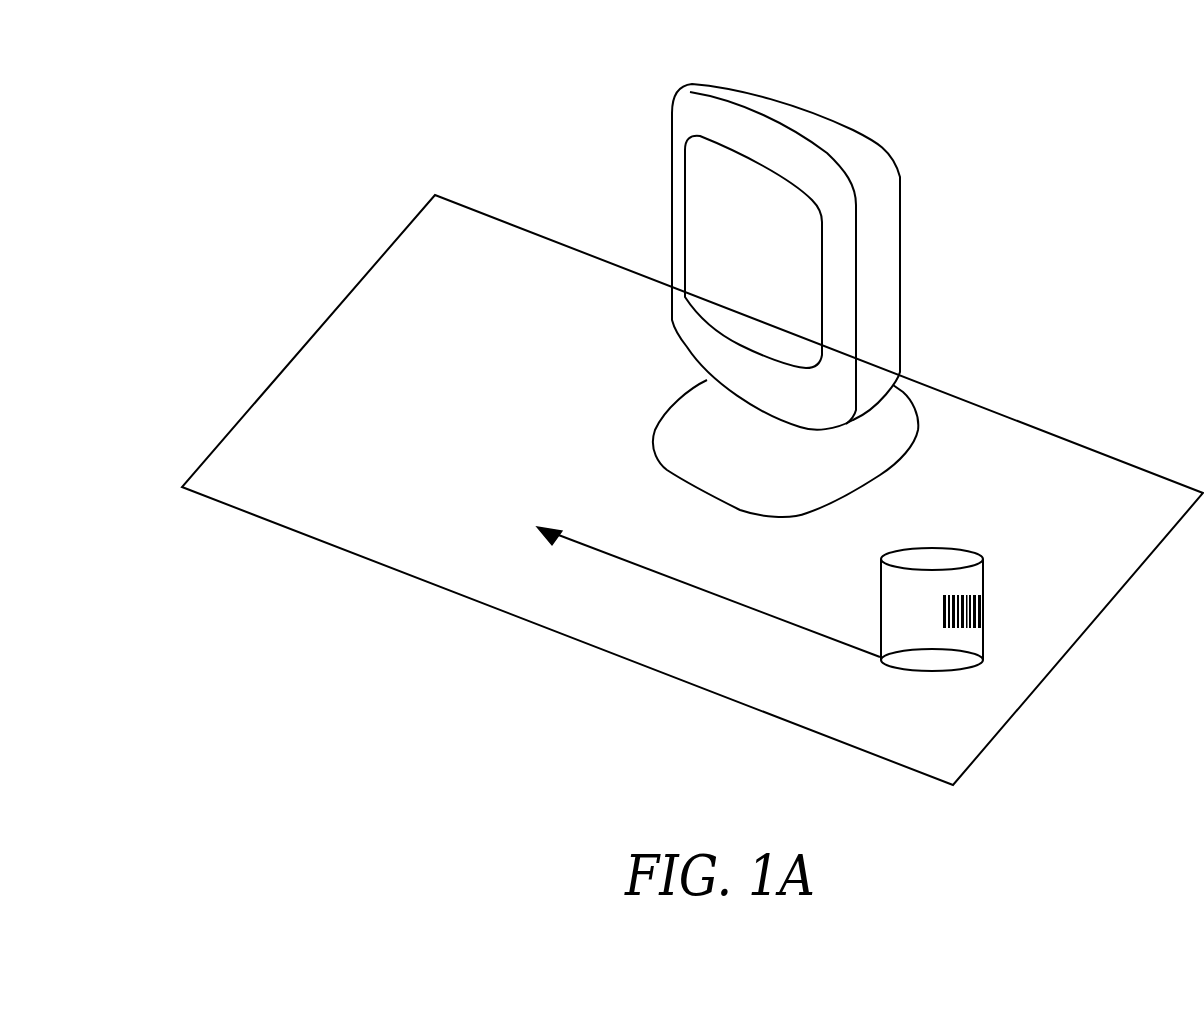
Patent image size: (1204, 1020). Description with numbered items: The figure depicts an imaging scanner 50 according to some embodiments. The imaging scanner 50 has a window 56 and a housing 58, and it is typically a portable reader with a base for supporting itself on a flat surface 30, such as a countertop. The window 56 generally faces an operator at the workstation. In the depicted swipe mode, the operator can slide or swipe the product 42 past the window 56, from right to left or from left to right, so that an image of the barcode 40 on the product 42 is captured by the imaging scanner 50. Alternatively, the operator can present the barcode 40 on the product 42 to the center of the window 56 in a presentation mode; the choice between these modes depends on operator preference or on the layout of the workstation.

The flat surface 30 is at (257, 415).
The barcode 40 is at (983, 607).
The product 42 is at (928, 556).
The imaging scanner 50 is at (804, 289).
The window 56 is at (702, 206).
The housing 58 is at (902, 264).